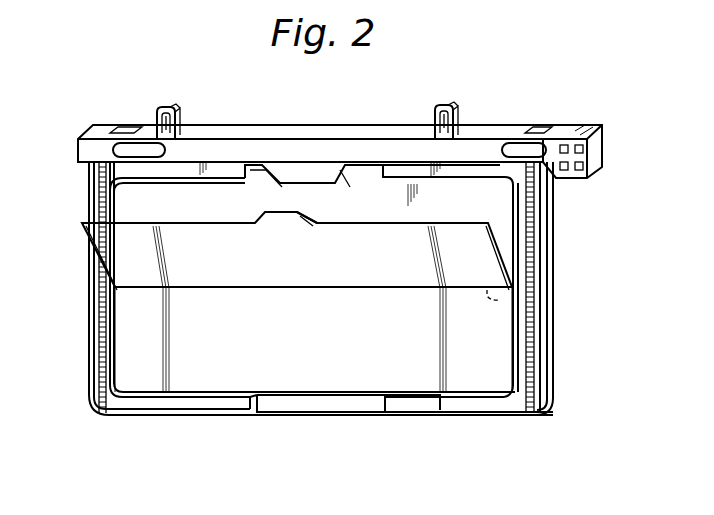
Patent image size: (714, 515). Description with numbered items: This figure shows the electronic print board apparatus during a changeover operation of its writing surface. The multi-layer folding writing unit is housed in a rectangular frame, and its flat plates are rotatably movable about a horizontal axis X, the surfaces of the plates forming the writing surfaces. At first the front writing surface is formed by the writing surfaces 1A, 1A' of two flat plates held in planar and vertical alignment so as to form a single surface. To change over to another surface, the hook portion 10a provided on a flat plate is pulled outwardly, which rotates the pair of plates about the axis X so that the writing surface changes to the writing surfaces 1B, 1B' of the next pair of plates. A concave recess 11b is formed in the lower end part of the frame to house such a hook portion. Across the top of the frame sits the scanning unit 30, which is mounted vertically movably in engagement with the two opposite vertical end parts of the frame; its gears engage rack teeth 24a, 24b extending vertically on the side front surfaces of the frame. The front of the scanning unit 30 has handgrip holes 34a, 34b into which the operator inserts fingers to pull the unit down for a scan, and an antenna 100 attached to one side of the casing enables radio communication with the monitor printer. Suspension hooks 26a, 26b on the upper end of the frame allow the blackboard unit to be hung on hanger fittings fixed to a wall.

The writing surface 1A is at (339, 251).
The writing surface 1A' is at (359, 339).
The writing surface 1B is at (277, 279).
The writing surface 1B' is at (419, 281).
The horizontal axis X is at (510, 296).
The hook portion 10a is at (310, 222).
The concave recess 11b is at (348, 405).
The rack teeth 24a is at (100, 346).
The rack teeth 24b is at (536, 378).
The suspension hook 26a is at (179, 111).
The suspension hook 26b is at (454, 104).
The scanning unit 30 is at (580, 130).
The handgrip hole 34a is at (136, 149).
The handgrip hole 34b is at (527, 152).
The antenna 100 is at (596, 147).